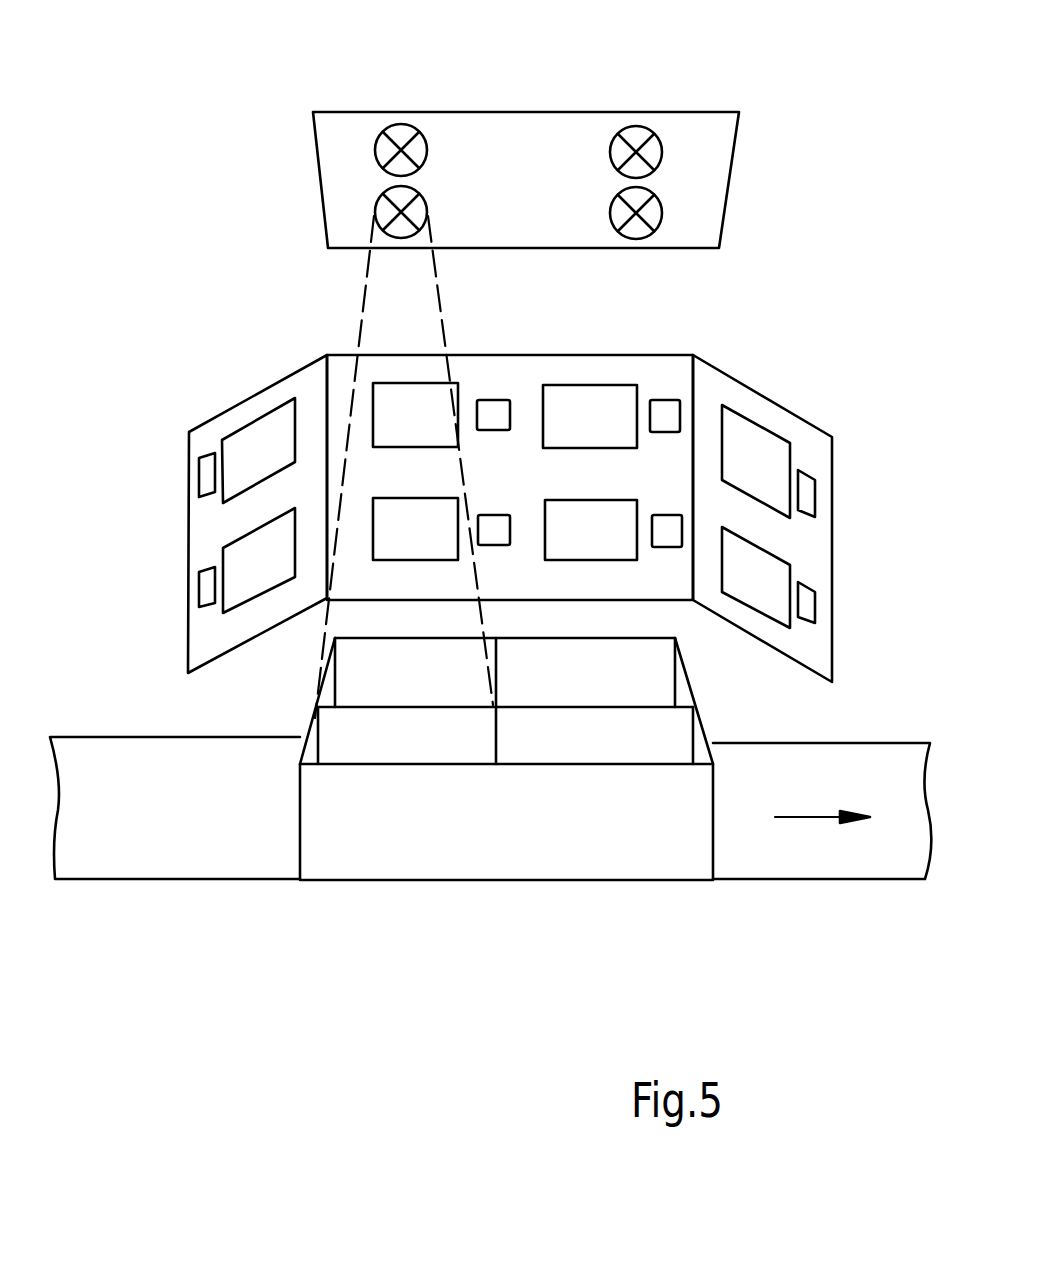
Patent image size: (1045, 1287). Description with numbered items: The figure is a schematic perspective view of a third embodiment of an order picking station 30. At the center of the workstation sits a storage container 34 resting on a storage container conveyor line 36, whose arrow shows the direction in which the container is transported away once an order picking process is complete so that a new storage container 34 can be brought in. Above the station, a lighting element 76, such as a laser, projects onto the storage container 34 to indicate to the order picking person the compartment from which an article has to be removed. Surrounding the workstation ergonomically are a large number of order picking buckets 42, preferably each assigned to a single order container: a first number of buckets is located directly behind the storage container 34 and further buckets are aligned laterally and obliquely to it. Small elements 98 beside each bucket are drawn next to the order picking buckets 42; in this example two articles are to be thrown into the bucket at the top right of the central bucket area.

The order picking station 30 is at (337, 928).
The storage container 34 is at (560, 848).
The storage container conveyor line 36 is at (818, 838).
The order picking buckets 42 is at (243, 469).
The lighting element 76 is at (415, 193).
The sensor 98 is at (662, 400).